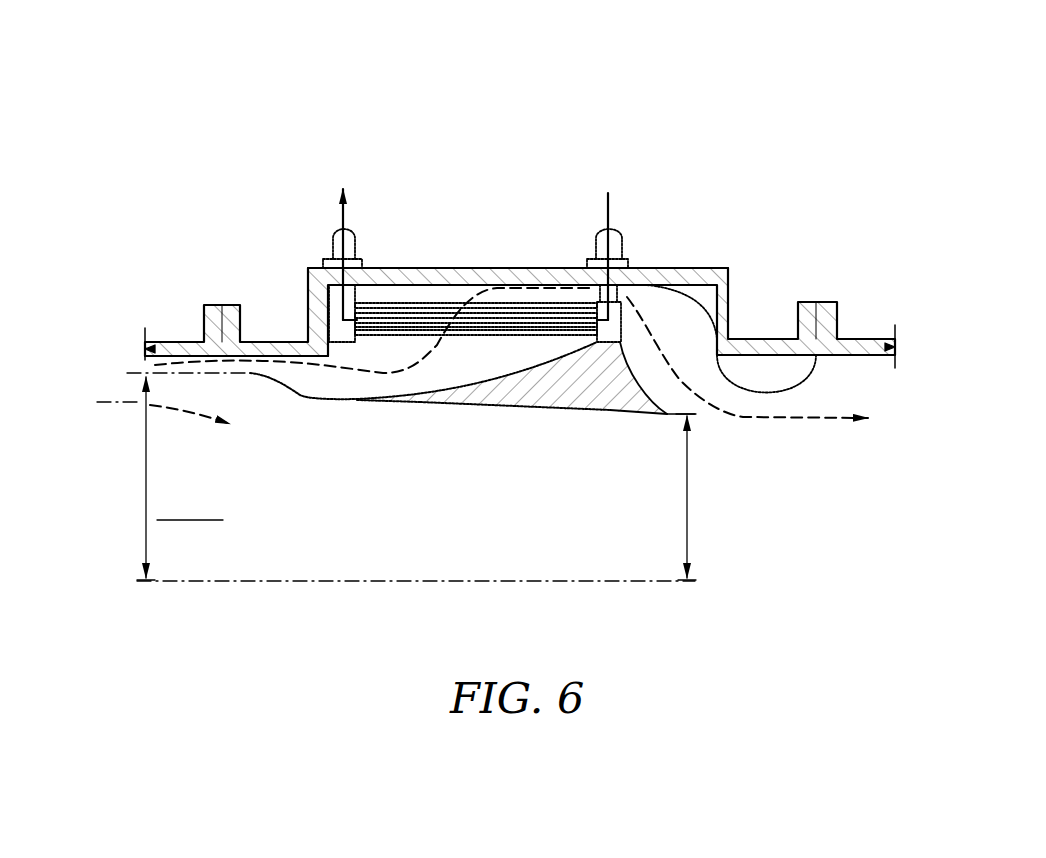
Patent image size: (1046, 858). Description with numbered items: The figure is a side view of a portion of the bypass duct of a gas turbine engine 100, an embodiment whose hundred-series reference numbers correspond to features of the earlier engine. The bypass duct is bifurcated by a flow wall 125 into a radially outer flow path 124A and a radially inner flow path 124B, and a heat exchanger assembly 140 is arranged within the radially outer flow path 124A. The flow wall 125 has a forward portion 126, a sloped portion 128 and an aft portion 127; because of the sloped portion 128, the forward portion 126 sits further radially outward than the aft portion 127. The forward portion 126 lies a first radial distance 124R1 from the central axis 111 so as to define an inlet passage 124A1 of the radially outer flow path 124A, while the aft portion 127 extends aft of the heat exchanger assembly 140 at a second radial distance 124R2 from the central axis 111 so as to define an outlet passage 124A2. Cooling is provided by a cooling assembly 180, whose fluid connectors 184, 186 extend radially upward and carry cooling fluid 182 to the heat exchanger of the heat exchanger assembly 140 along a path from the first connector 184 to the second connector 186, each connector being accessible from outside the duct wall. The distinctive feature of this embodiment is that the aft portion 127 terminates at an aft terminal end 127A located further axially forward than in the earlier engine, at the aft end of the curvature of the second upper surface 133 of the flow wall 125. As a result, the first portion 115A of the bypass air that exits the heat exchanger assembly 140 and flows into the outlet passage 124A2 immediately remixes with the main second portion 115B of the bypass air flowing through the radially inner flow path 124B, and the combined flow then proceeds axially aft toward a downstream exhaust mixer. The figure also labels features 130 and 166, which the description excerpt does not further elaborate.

The gas turbine engine 100 is at (806, 114).
The central axis 111 is at (182, 583).
The first portion of the bypass air 115A is at (448, 363).
The second portion of the bypass air 115B is at (127, 401).
The radially outer flow path 124A is at (517, 358).
The inlet passage 124A1 is at (233, 378).
The outlet passage 124A2 is at (690, 360).
The radially inner flow path 124B is at (190, 507).
The first radial distance 124R1 is at (145, 478).
The second radial distance 124R2 is at (687, 530).
The flow wall 125 is at (270, 355).
The forward portion of the flow wall 126 is at (308, 380).
The aft portion of the flow wall 127 is at (517, 416).
The aft terminal end 127A is at (665, 412).
The sloped portion of the flow wall 128 is at (358, 386).
The lower surface 130 is at (417, 408).
The second upper surface 133 is at (630, 388).
The heat exchanger assembly 140 is at (448, 305).
The combustor shell 166 is at (518, 266).
The cooling assembly 180 is at (596, 195).
The cooling fluid 182 is at (612, 207).
The first fluid connector 184 is at (623, 240).
The second fluid connector 186 is at (338, 250).